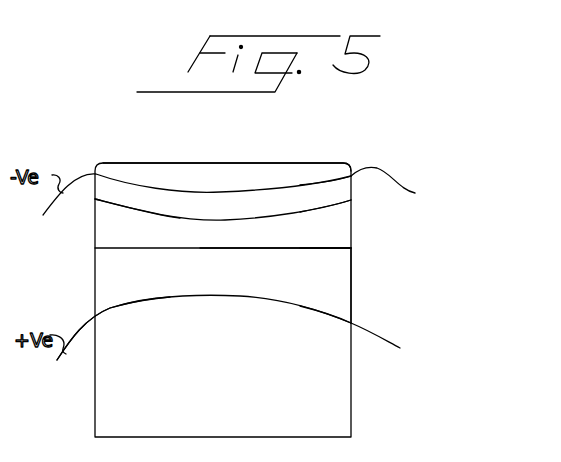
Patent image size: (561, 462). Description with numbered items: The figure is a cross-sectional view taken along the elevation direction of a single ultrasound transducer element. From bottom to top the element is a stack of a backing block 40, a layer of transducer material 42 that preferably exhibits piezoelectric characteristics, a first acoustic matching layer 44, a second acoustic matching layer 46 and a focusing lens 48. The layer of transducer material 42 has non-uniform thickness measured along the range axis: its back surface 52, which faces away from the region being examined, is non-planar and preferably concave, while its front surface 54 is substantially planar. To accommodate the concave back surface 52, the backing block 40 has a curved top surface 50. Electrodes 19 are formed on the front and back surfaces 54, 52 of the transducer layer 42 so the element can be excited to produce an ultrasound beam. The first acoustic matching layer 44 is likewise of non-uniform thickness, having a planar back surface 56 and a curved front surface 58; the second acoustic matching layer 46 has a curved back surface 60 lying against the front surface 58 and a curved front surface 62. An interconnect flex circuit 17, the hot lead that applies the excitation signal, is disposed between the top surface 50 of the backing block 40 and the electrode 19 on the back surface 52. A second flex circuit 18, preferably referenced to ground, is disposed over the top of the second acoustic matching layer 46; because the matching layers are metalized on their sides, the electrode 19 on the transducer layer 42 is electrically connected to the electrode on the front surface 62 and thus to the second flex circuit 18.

The interconnect flex circuit 17 is at (398, 340).
The second flex circuit 18 is at (399, 183).
The electrodes 19 is at (323, 246).
The backing block 40 is at (308, 402).
The layer of transducer material 42 is at (320, 283).
The first acoustic matching layer 44 is at (347, 220).
The second acoustic matching layer 46 is at (333, 197).
The focusing lens 48 is at (317, 170).
The top surface 50 is at (123, 318).
The back surface 52 is at (118, 300).
The front surface 54 is at (302, 254).
The back surface 56 is at (143, 240).
The front surface 58 is at (115, 213).
The back surface 60 is at (145, 206).
The front surface 62 is at (110, 183).